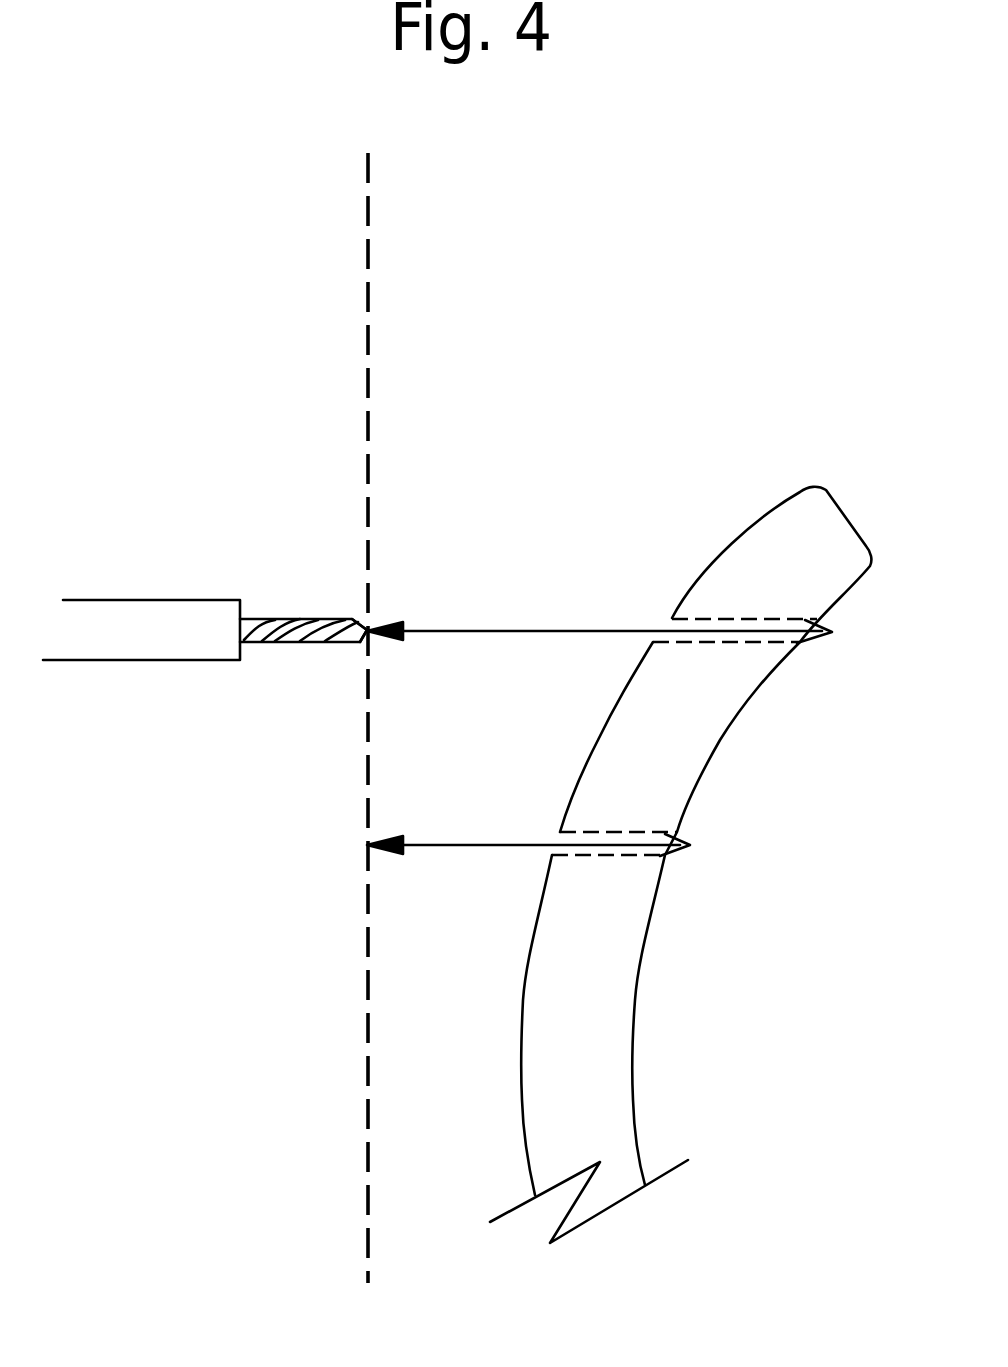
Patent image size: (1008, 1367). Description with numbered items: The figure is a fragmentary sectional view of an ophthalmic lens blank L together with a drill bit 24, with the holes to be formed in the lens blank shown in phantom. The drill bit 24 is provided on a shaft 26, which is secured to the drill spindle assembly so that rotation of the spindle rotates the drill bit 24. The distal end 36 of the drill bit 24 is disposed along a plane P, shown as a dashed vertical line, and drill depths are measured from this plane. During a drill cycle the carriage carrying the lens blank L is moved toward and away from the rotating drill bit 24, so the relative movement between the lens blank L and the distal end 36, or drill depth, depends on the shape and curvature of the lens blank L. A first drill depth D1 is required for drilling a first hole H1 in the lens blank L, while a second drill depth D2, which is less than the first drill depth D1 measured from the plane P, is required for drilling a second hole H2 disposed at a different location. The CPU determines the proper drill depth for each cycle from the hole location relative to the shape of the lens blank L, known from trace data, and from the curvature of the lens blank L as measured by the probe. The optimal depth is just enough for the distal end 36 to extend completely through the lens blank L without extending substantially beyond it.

The shaft 26 is at (117, 598).
The drill bit 24 is at (303, 643).
The distal end 36 is at (366, 618).
The plane P is at (368, 286).
The lens blank L is at (608, 1048).
The first hole H1 is at (727, 642).
The second hole H2 is at (618, 855).
The first drill depth D1 is at (527, 627).
The second drill depth D2 is at (492, 842).